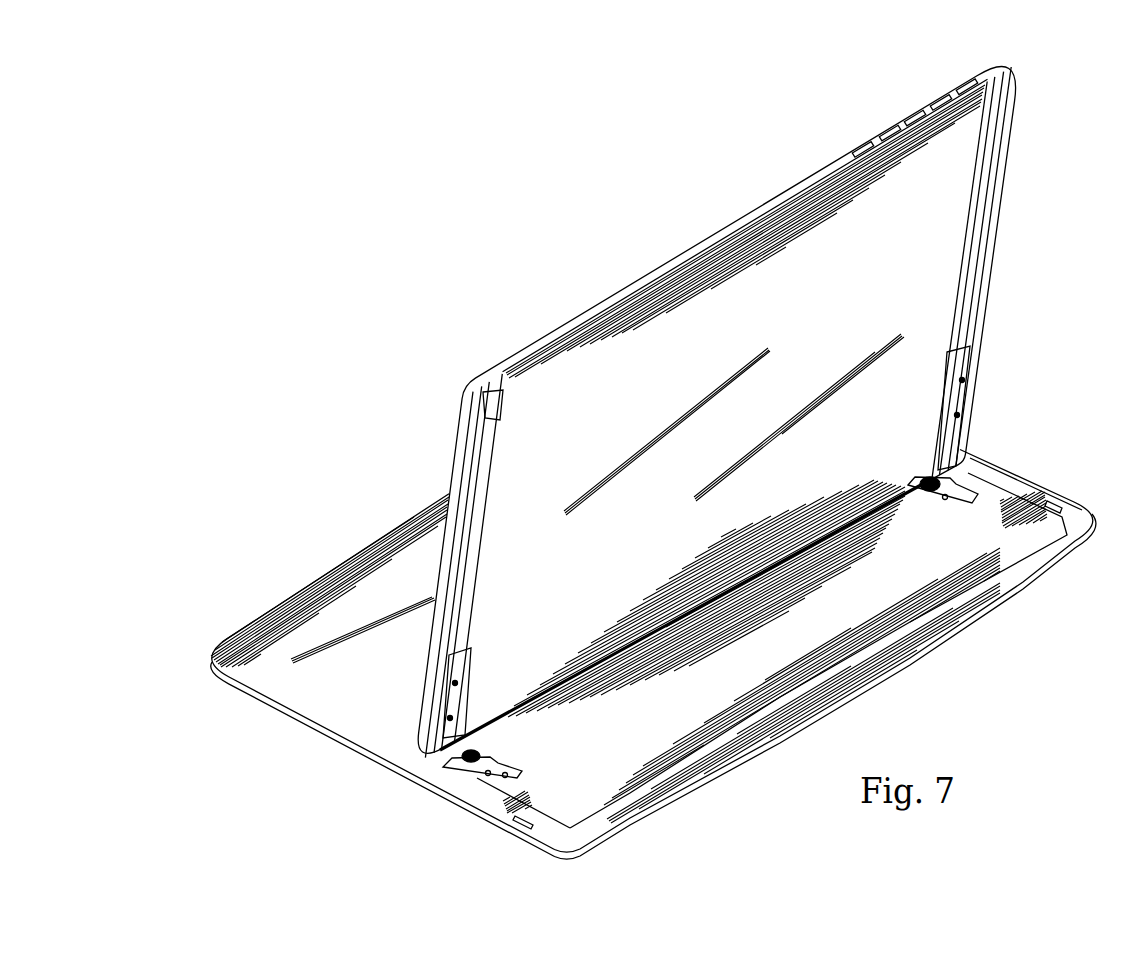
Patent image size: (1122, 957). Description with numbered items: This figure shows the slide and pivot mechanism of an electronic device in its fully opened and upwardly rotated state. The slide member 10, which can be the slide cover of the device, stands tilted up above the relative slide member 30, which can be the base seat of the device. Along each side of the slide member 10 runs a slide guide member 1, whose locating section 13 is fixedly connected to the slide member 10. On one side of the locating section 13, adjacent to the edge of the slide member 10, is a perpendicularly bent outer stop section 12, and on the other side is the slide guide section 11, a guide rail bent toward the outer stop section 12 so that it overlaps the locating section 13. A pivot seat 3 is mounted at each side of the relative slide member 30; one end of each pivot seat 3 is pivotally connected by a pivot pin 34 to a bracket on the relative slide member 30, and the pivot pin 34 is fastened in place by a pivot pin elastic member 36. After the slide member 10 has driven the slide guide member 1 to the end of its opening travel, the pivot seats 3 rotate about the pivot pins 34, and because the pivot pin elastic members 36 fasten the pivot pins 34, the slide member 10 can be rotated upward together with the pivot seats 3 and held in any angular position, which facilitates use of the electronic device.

The slide guide member 1 is at (990, 316).
The pivot seat 3 is at (953, 437).
The slide member 10 is at (708, 222).
The slide guide section 11 is at (971, 231).
The outer stop section 12 is at (998, 150).
The locating section 13 is at (985, 186).
The relative slide member 30 is at (301, 628).
The pivot pin 34 is at (917, 494).
The pivot pin elastic member 36 is at (957, 473).